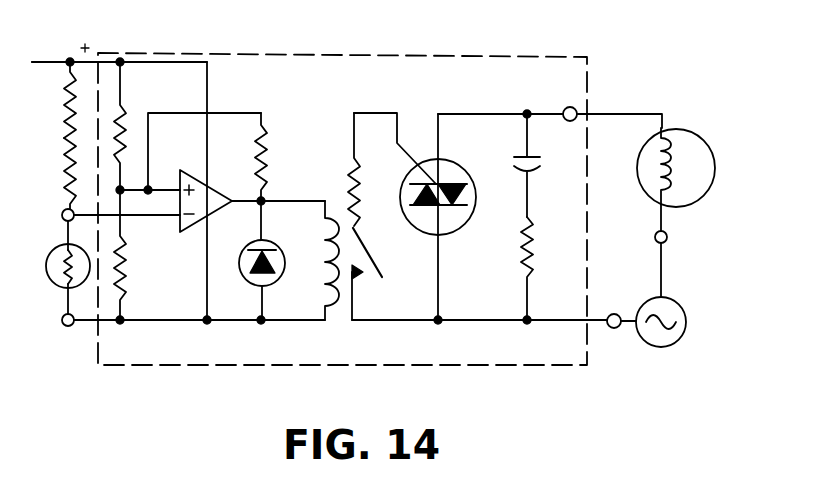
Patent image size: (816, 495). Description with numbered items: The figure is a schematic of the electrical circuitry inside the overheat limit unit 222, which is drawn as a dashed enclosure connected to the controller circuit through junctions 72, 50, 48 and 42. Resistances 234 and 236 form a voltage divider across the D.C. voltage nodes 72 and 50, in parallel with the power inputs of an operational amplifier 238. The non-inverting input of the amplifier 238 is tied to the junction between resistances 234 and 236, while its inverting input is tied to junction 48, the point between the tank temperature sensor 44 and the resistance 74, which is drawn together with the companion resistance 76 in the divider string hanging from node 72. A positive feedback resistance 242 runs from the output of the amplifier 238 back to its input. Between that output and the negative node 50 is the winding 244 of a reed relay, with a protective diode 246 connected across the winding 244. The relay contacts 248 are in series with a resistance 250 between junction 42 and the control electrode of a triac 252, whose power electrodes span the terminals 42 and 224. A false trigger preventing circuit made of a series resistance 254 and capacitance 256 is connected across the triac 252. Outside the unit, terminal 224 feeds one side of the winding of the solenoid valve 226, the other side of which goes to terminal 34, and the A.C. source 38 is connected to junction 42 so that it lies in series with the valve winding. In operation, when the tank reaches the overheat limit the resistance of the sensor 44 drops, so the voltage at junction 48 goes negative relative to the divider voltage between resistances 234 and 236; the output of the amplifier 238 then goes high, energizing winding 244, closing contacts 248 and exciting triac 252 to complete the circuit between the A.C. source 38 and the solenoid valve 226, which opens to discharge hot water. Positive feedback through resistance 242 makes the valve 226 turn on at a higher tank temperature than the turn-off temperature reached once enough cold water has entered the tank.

The overheat limit unit 222 is at (443, 56).
The junction 72 is at (36, 63).
The resistor (upper portion of voltage divider) 76 is at (63, 107).
The resistance 74 is at (65, 163).
The junction 48 is at (62, 212).
The tank temperature sensor 44 is at (45, 258).
The junction 50 is at (62, 316).
The resistance 234 is at (124, 112).
The resistance 236 is at (127, 273).
The operational amplifier 238 is at (214, 197).
The positive feedback resistance 242 is at (270, 158).
The protective diode 246 is at (277, 250).
The winding 244 is at (330, 267).
The resistance 250 is at (345, 196).
The contacts 248 is at (365, 259).
The triac 252 is at (453, 168).
The capacitance 256 is at (537, 165).
The series resistance 254 is at (521, 240).
The terminal 224 is at (577, 108).
The solenoid valve 226 is at (700, 150).
The terminal 34 is at (668, 237).
The junction 42 is at (619, 312).
The A.C. source 38 is at (677, 307).